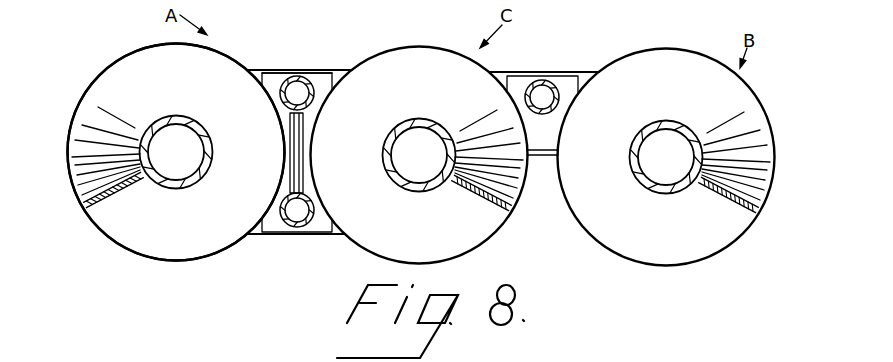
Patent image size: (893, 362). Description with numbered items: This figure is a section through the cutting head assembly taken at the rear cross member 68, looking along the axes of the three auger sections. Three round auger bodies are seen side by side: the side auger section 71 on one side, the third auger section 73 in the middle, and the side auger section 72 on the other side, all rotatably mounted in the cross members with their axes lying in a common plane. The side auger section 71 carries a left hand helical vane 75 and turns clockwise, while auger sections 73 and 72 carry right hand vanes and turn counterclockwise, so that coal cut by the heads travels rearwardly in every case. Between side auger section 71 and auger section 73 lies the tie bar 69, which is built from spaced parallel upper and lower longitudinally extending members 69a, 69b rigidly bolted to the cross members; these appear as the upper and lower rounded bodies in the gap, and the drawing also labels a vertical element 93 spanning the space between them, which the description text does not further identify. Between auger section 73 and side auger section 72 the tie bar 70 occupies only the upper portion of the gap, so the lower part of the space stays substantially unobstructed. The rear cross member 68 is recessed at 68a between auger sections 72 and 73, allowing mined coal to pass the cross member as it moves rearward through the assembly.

The side auger section 71 is at (163, 233).
The left hand helical vane 75 is at (115, 63).
The third auger section 73 is at (484, 246).
The side auger section 72 is at (618, 256).
The rear cross member 68 is at (315, 235).
The recess 68a is at (545, 158).
The tie bar 69 is at (313, 63).
The upper longitudinally extending member 69a is at (273, 77).
The lower longitudinally extending member 69b is at (272, 228).
The tie bar 70 is at (563, 68).
The slot in link 68 93 is at (298, 143).